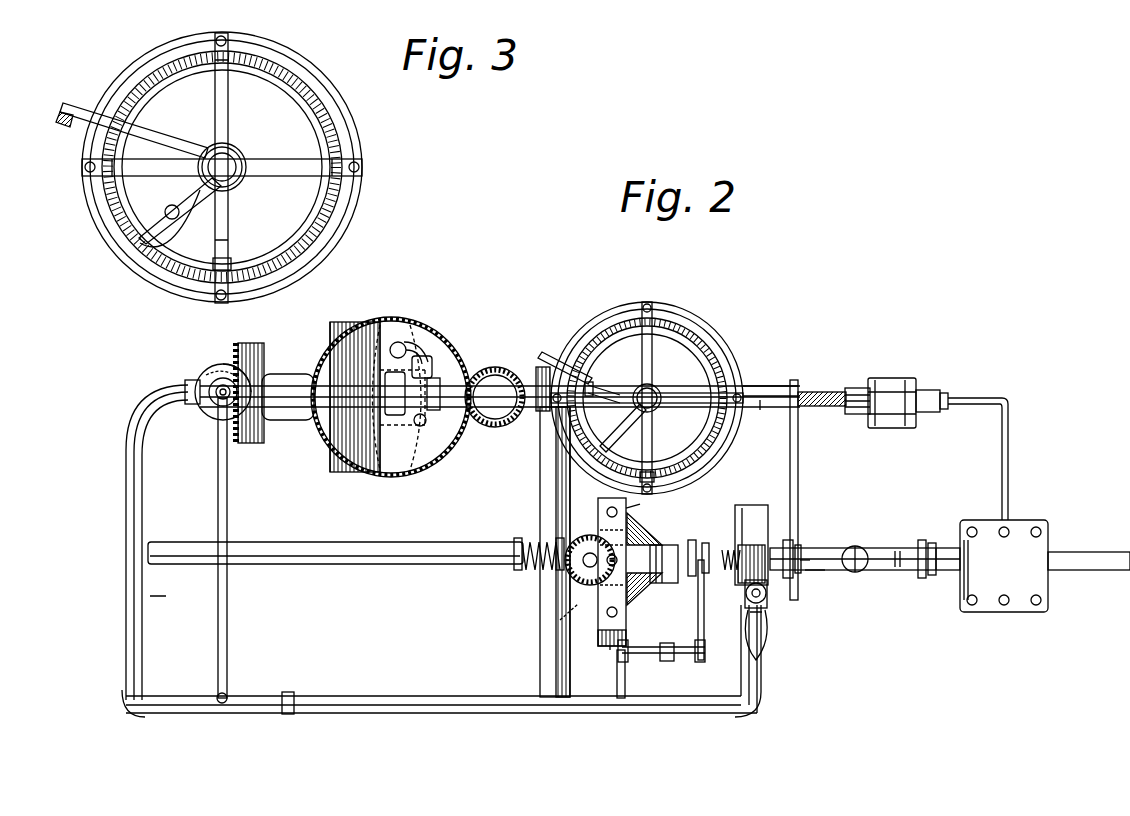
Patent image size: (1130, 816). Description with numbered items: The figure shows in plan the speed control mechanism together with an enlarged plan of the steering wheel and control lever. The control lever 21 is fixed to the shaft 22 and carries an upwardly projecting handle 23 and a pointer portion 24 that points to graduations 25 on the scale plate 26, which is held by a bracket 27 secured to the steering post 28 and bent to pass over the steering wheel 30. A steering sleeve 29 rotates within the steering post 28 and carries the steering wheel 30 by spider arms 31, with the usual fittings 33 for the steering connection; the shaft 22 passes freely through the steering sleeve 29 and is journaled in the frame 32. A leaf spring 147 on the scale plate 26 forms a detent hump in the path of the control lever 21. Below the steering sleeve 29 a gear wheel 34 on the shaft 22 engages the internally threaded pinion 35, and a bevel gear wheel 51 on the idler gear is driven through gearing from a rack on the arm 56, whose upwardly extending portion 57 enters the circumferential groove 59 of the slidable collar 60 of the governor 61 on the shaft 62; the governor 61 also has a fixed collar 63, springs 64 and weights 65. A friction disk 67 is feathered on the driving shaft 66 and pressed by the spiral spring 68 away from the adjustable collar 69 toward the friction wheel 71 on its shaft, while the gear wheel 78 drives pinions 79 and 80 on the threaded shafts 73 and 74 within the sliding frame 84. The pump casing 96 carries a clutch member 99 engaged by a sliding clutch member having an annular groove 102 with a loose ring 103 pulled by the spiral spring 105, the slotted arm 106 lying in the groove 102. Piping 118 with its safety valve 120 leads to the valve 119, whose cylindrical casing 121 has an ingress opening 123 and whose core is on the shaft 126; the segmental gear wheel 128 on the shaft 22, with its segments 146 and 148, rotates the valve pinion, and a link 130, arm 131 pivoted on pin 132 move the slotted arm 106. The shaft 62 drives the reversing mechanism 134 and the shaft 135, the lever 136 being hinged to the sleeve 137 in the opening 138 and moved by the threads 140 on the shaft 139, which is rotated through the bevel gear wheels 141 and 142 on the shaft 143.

In FIG. 3, the control lever 21 is at (150, 248).
In FIG. 2, the control lever 21 is at (616, 420).
In FIG. 3, the shaft 22 is at (238, 152).
In FIG. 2, the shaft 22 is at (642, 385).
In FIG. 3, the handle 23 is at (170, 205).
In FIG. 3, the pointer portion 24 is at (140, 243).
In FIG. 2, the pointer portion 24 is at (540, 470).
In FIG. 3, the graduations 25 is at (332, 200).
In FIG. 2, the graduations 25 is at (742, 360).
In FIG. 3, the scale plate 26 is at (355, 128).
In FIG. 2, the scale plate 26 is at (722, 345).
In FIG. 3, the bracket 27 is at (82, 106).
In FIG. 2, the bracket 27 is at (552, 352).
In FIG. 3, the steering post 28 is at (238, 182).
In FIG. 2, the steering sleeve 29 is at (612, 388).
In FIG. 3, the steering wheel 30 is at (342, 108).
In FIG. 2, the steering wheel 30 is at (636, 302).
In FIG. 3, the spider arms 31 is at (142, 158).
In FIG. 2, the spider arms 31 is at (642, 362).
In FIG. 2, the frame 32 is at (895, 378).
In FIG. 2, the fittings 33 is at (420, 335).
In FIG. 2, the gear wheel 34 is at (378, 318).
In FIG. 2, the pinion 35 is at (504, 372).
In FIG. 2, the bevel gear wheel 51 is at (538, 366).
In FIG. 2, the arm 56 is at (770, 384).
In FIG. 2, the upwardly extending portion 57 is at (800, 545).
In FIG. 2, the circumferential groove 59 is at (790, 578).
In FIG. 2, the slidable collar 60 is at (805, 576).
In FIG. 2, the governor 61 is at (866, 556).
In FIG. 2, the shaft 62 is at (926, 540).
In FIG. 2, the collar 63 is at (930, 580).
In FIG. 2, the springs 64 is at (900, 570).
In FIG. 2, the weight 65 is at (856, 546).
In FIG. 2, the driving shaft 66 is at (398, 540).
In FIG. 2, the friction disk 67 is at (560, 608).
In FIG. 2, the spiral spring 68 is at (516, 572).
In FIG. 2, the collar 69 is at (518, 540).
In FIG. 2, the friction wheel 71 is at (600, 520).
In FIG. 2, the shaft 73 is at (598, 620).
In FIG. 2, the shaft 74 is at (630, 510).
In FIG. 2, the gear wheel 78 is at (568, 575).
In FIG. 2, the pinion 79 is at (560, 628).
In FIG. 2, the pinion 80 is at (640, 520).
In FIG. 2, the frame 84 is at (608, 648).
In FIG. 2, the pump casing 96 is at (745, 505).
In FIG. 2, the clutch member 99 is at (736, 520).
In FIG. 2, the annular groove 102 is at (700, 590).
In FIG. 2, the ring 103 is at (648, 590).
In FIG. 2, the spiral spring 105 is at (688, 555).
In FIG. 2, the slotted arm 106 is at (724, 548).
In FIG. 2, the piping 118 is at (150, 392).
In FIG. 2, the valve 119 is at (216, 376).
In FIG. 2, the safety valve 120 is at (768, 612).
In FIG. 2, the cylindrical casing 121 is at (198, 375).
In FIG. 2, the opening 123 is at (205, 405).
In FIG. 2, the shaft 126 is at (185, 380).
In FIG. 2, the segmental gear wheel 128 is at (270, 362).
In FIG. 2, the link 130 is at (288, 696).
In FIG. 2, the arm 131 is at (648, 660).
In FIG. 2, the pin 132 is at (668, 664).
In FIG. 2, the reversing mechanism 134 is at (1004, 566).
In FIG. 2, the shaft 135 is at (1068, 550).
In FIG. 2, the lever 136 is at (990, 398).
In FIG. 2, the sleeve 137 is at (940, 385).
In FIG. 2, the opening 138 is at (858, 386).
In FIG. 2, the shaft 139 is at (776, 406).
In FIG. 2, the threads 140 is at (820, 390).
In FIG. 2, the bevel gear wheel 141 is at (405, 330).
In FIG. 2, the bevel gear wheel 142 is at (355, 320).
In FIG. 2, the shaft 143 is at (408, 418).
In FIG. 2, the segment 146 is at (240, 350).
In FIG. 3, the leaf spring 147 is at (228, 266).
In FIG. 2, the leaf spring 147 is at (652, 476).
In FIG. 2, the segment 148 is at (240, 450).